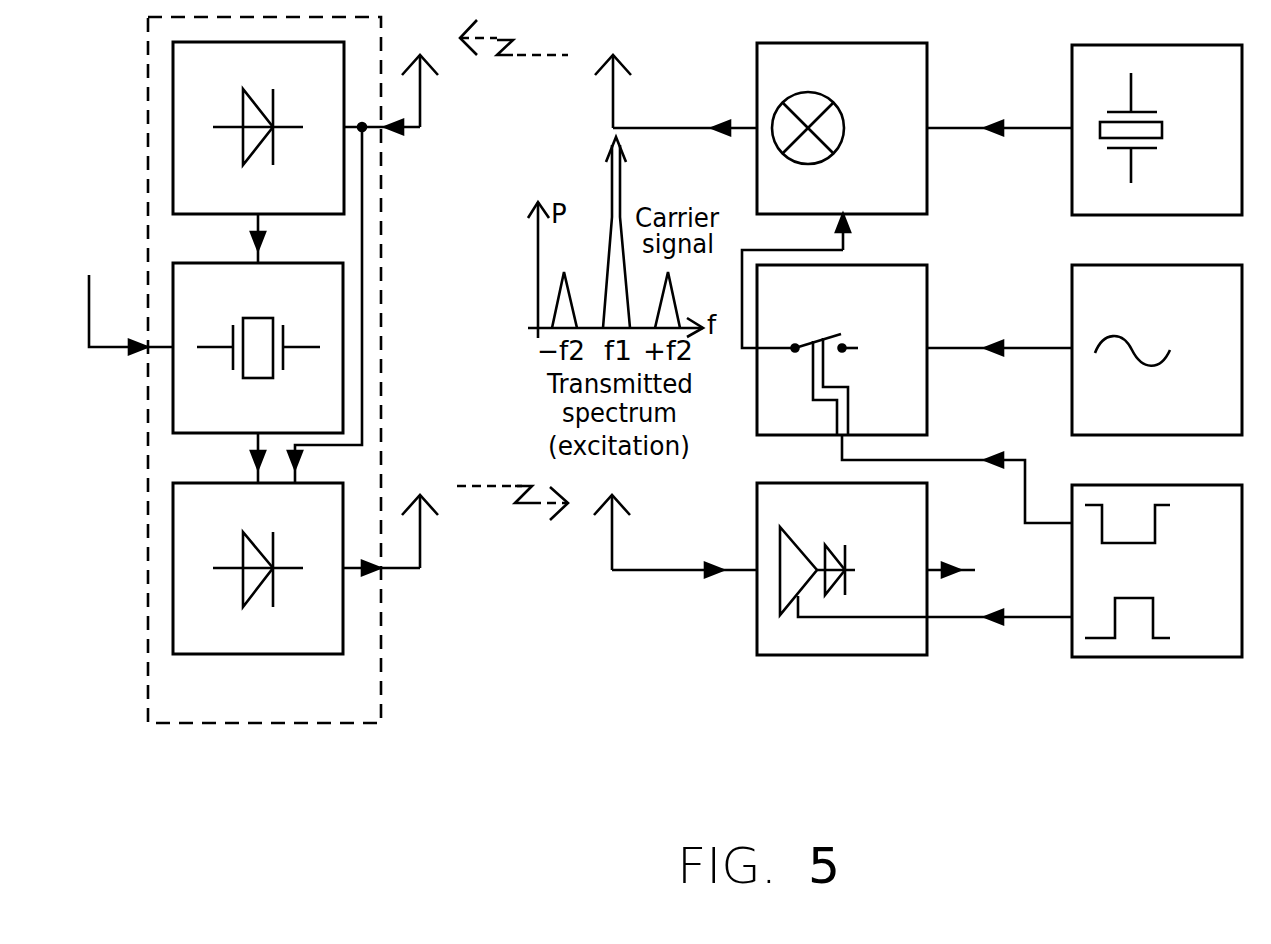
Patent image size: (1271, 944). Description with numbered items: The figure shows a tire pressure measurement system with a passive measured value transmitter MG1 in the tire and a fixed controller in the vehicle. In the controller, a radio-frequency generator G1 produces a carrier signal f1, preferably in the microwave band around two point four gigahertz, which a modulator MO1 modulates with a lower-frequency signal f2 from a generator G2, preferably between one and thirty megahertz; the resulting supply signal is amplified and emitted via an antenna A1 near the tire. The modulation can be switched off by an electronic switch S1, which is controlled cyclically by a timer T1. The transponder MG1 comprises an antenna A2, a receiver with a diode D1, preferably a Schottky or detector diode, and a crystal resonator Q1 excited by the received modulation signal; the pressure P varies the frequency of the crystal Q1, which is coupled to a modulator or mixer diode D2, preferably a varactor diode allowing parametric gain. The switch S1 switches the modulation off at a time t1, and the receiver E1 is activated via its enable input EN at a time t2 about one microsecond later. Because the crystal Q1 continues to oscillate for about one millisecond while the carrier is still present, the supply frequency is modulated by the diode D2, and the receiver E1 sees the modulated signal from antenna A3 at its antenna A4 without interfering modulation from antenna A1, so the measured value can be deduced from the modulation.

The measured value transmitter MG1 is at (264, 370).
The diode D1 is at (296, 262).
The crystal resonator Q1 is at (258, 373).
The modulator diode D2 is at (296, 568).
The pressure P is at (103, 295).
The antenna A1 is at (669, 95).
The antenna A2 is at (430, 91).
The antenna A3 is at (430, 531).
The antenna A4 is at (666, 536).
The modulator MO1 is at (834, 195).
The radio-frequency generator G1 is at (1157, 130).
The generator G2 is at (1157, 350).
The electronic switch S1 is at (914, 394).
The carrier signal f1 is at (999, 110).
The lower-frequency signal f2 is at (999, 331).
The receiver E1 is at (882, 569).
The enable input EN is at (935, 623).
The timer T1 is at (1157, 571).
The time t1 is at (1123, 531).
The time t2 is at (1127, 611).